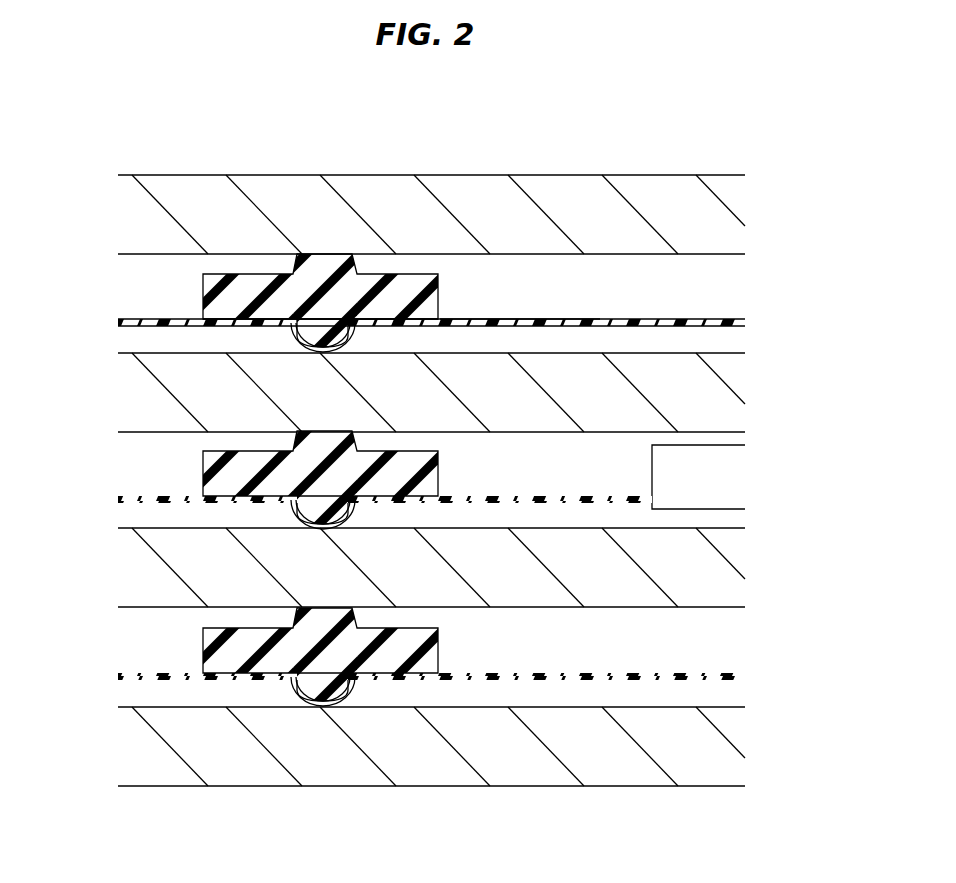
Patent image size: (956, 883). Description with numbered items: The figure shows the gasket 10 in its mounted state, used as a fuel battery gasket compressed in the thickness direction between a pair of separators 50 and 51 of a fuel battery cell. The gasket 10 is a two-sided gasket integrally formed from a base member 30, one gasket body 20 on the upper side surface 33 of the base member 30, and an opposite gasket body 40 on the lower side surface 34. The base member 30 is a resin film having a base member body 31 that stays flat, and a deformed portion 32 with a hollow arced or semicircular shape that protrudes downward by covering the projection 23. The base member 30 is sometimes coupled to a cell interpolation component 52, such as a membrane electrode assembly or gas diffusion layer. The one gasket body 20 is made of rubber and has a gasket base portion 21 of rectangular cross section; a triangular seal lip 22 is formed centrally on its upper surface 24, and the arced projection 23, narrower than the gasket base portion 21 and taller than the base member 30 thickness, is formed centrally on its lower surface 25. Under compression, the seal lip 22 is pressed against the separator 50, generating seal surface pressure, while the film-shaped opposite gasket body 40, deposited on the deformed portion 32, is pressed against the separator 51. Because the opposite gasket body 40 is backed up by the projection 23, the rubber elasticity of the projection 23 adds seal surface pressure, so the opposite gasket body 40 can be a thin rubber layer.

The gasket 10 is at (307, 256).
The one gasket body 20 is at (366, 256).
The gasket base portion 21 is at (440, 300).
The seal lip 22 is at (322, 262).
The projection 23 is at (316, 332).
The one side surface of the gasket base portion 24 is at (250, 274).
The opposite side surface of the gasket base portion 25 is at (228, 320).
The base member 30 is at (431, 255).
The base member body 31 is at (678, 316).
The deformed portion 32 is at (345, 327).
The one side surface of the base member 33 is at (507, 318).
The opposite side surface of the base member 34 is at (527, 327).
The opposite gasket body 40 is at (342, 330).
The separator 50 is at (700, 218).
The separator 51 is at (700, 392).
The cell interpolation component 52 is at (720, 483).